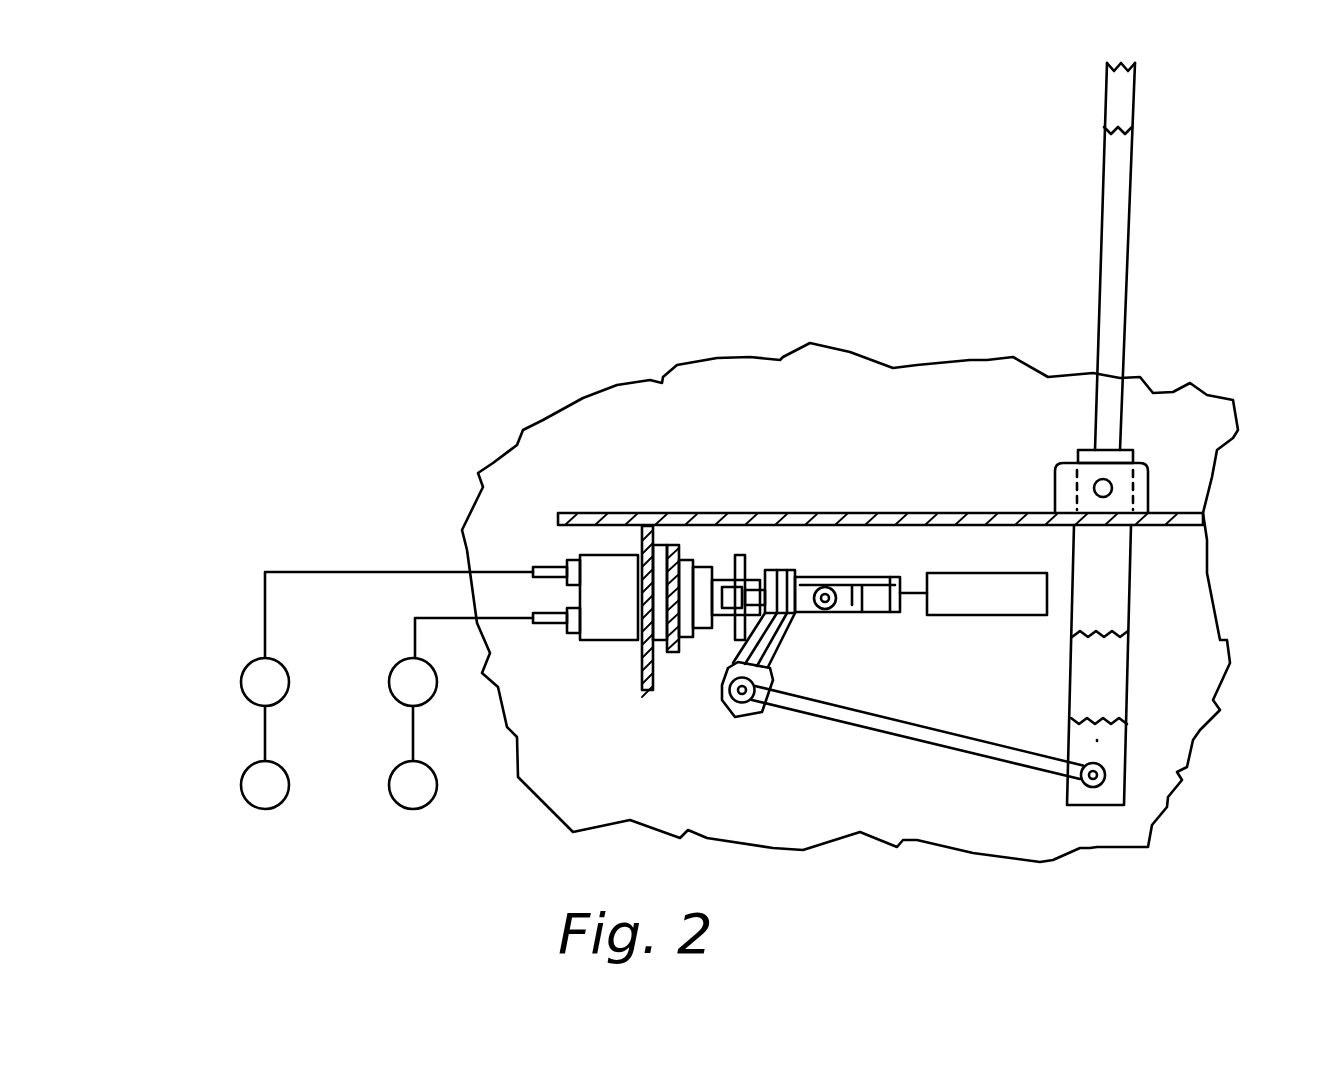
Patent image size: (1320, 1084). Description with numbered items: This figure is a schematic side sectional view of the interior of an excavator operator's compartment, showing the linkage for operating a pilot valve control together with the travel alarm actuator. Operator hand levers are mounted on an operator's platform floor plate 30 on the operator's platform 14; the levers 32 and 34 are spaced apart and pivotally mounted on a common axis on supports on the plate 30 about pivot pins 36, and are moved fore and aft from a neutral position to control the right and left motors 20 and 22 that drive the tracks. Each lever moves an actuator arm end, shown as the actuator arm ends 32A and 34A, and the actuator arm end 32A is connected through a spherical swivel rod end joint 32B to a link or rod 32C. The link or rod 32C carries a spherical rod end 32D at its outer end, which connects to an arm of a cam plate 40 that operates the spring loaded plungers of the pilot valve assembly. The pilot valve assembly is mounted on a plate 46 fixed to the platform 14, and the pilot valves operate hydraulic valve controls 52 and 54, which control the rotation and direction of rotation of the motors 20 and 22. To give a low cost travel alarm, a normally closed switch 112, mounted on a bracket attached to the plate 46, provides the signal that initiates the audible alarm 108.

The operator's platform 14 is at (880, 445).
The right motor 20 is at (241, 785).
The left motor 22 is at (438, 787).
The operator's platform floor plate 30 is at (1190, 512).
The lever 32 is at (1115, 183).
The actuator arm end 32A is at (1097, 740).
The spherical swivel rod end joint 32B is at (1093, 788).
The link or rod 32C is at (908, 748).
The spherical rod end 32D is at (750, 712).
The lever 34 is at (1115, 88).
The actuator arm end 34A is at (1085, 672).
The pivot pin 36 is at (1095, 488).
The cam plate 40 is at (788, 660).
The plate 46 is at (641, 688).
The hydraulic valve control 52 is at (430, 696).
The hydraulic valve control 54 is at (240, 672).
The audible alarm 108 is at (978, 572).
The normally closed switch 112 is at (876, 600).